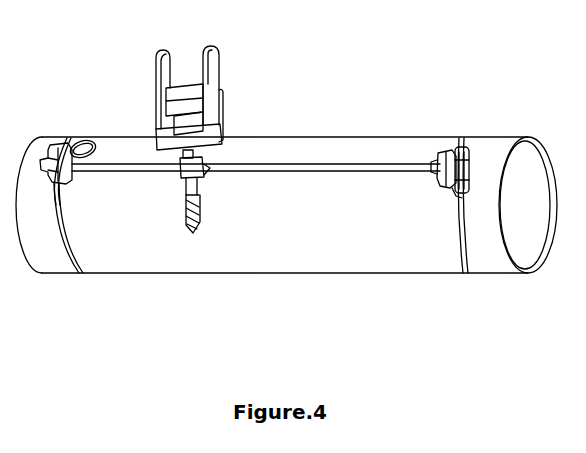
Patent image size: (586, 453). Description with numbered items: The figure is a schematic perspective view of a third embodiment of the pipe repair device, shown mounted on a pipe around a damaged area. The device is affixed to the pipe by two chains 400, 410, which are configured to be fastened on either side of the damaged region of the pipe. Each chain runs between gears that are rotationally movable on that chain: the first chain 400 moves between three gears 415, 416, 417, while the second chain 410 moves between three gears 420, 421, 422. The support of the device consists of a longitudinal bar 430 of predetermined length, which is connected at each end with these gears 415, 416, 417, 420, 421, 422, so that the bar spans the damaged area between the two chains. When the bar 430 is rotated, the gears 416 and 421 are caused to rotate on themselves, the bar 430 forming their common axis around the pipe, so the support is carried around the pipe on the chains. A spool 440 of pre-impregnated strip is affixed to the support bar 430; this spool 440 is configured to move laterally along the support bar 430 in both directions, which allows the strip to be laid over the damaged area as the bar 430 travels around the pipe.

The chain 400 is at (69, 277).
The chain 410 is at (463, 266).
The gear 415 is at (68, 145).
The gear 416 is at (70, 162).
The gear 417 is at (53, 194).
The gear 420 is at (465, 143).
The gear 421 is at (445, 153).
The gear 422 is at (455, 197).
The bar 430 is at (283, 169).
The spool 440 is at (228, 74).